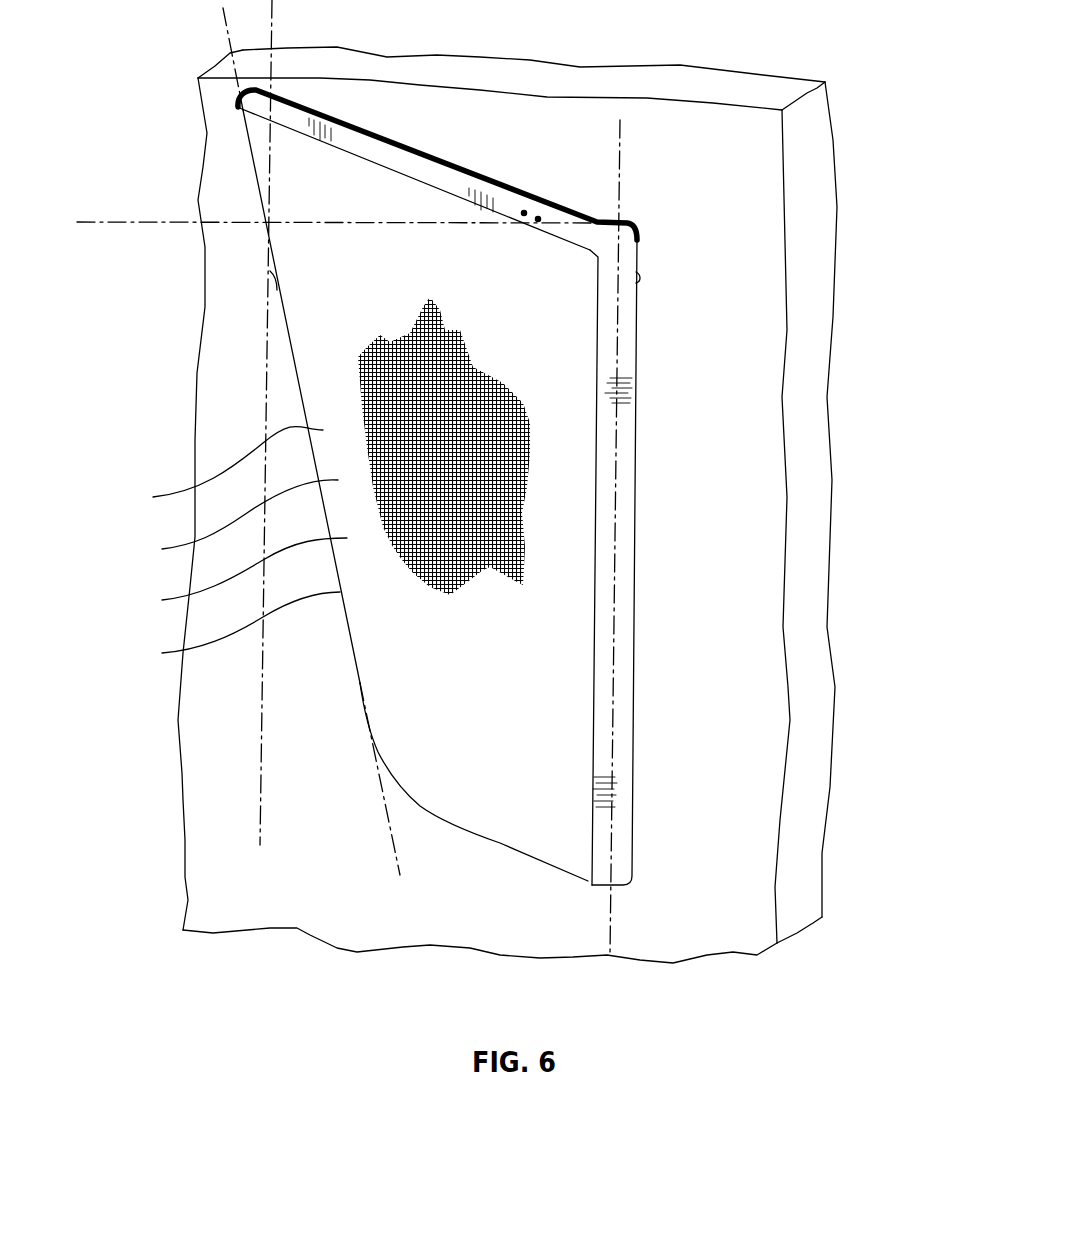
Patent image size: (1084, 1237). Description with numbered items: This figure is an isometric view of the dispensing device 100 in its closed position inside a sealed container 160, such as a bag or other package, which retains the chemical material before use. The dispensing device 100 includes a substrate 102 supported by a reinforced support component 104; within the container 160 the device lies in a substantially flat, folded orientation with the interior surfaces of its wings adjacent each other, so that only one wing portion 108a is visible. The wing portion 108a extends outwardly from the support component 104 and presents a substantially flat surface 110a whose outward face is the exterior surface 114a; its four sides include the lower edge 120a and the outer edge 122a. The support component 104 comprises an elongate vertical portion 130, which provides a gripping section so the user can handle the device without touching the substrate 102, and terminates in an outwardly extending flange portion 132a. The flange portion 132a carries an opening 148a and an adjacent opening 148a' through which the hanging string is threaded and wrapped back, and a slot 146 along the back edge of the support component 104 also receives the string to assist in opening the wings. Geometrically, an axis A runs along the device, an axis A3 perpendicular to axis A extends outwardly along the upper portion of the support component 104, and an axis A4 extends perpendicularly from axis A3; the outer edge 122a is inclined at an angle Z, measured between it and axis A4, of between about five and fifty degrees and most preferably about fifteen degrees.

The dispensing device 100 is at (436, 522).
The substrate 102 is at (372, 653).
The support component 104 is at (623, 497).
The wing portion 108a is at (208, 469).
The substantially flat surface 110a is at (221, 522).
The exterior surface 114a is at (225, 577).
The outer edge 122a is at (221, 630).
The lower edge 120a is at (500, 845).
The elongate vertical portion 130 is at (627, 438).
The flange portion 132a is at (438, 177).
The slot 146 is at (645, 278).
The opening 148a is at (515, 160).
The adjacent opening 148a' is at (564, 181).
The sealed container 160 is at (753, 660).
The axis A is at (620, 131).
The axis A3 is at (77, 222).
The axis A4 is at (265, 408).
The angle Z is at (273, 273).